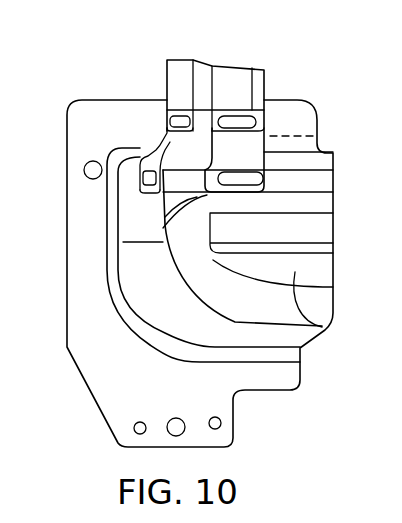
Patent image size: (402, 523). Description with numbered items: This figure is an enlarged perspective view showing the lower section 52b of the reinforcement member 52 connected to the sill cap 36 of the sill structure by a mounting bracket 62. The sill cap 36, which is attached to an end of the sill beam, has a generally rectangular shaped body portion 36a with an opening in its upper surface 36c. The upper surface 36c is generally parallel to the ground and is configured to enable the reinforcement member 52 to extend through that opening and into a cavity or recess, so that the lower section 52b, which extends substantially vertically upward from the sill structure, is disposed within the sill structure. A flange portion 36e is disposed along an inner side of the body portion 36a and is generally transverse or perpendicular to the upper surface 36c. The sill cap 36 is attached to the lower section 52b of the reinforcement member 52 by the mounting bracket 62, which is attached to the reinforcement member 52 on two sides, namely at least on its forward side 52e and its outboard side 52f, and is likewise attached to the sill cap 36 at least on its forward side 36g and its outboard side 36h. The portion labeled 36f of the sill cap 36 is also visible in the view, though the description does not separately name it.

The sill cap 36 is at (98, 397).
The body portion 36a is at (130, 230).
The upper surface 36c is at (290, 152).
The flange portion 36e is at (92, 341).
The cylindrical portion 36f is at (335, 305).
The forward side 36g is at (130, 200).
The outboard side 36h is at (318, 330).
The reinforcement member 52 is at (265, 84).
The lower section 52b is at (167, 82).
The forward side 52e is at (182, 70).
The outboard side 52f is at (232, 80).
The mounting bracket 62 is at (160, 136).